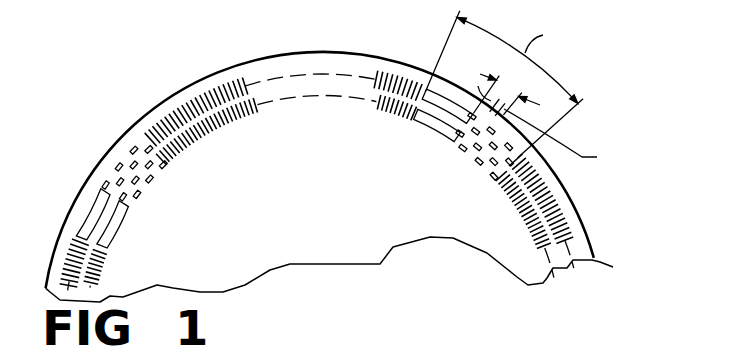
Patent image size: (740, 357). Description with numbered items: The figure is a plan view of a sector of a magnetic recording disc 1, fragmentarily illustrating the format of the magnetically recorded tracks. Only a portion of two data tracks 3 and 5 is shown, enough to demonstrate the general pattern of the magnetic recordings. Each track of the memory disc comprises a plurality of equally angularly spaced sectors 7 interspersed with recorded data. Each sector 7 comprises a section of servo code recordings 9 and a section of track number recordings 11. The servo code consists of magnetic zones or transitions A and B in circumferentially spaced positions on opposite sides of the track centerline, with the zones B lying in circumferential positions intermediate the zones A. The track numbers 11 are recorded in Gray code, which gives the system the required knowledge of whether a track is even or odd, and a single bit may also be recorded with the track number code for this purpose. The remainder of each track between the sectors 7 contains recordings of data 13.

The magnetic recording disc 1 is at (222, 70).
The data track 3 is at (260, 80).
The data track 5 is at (331, 98).
The sector 7 is at (493, 36).
The servo code recordings 9 is at (478, 164).
The track number recordings 11 is at (426, 126).
The data 13 is at (525, 222).